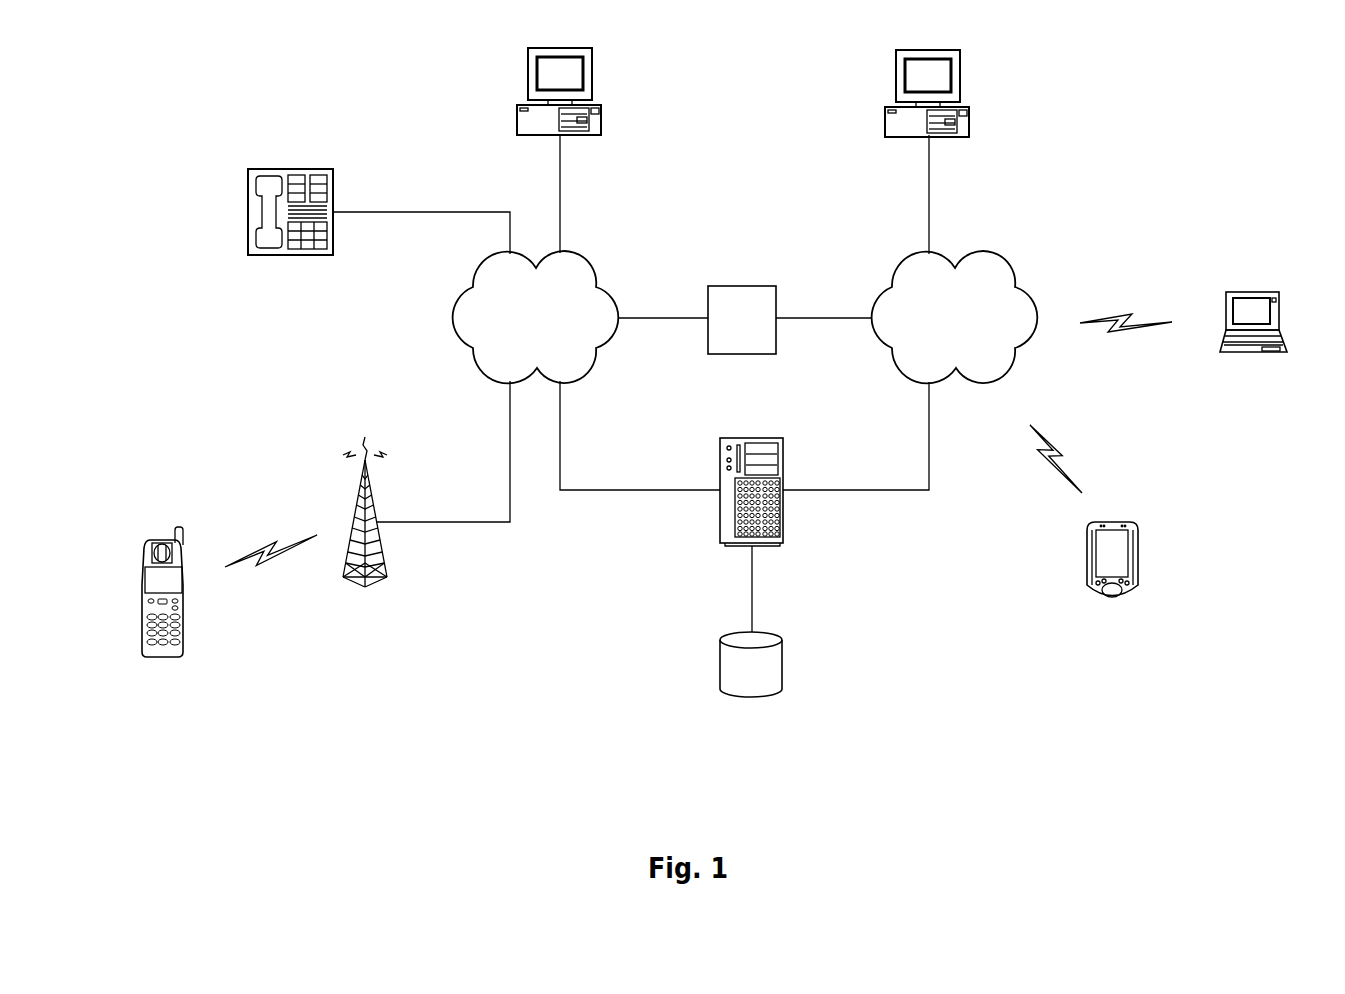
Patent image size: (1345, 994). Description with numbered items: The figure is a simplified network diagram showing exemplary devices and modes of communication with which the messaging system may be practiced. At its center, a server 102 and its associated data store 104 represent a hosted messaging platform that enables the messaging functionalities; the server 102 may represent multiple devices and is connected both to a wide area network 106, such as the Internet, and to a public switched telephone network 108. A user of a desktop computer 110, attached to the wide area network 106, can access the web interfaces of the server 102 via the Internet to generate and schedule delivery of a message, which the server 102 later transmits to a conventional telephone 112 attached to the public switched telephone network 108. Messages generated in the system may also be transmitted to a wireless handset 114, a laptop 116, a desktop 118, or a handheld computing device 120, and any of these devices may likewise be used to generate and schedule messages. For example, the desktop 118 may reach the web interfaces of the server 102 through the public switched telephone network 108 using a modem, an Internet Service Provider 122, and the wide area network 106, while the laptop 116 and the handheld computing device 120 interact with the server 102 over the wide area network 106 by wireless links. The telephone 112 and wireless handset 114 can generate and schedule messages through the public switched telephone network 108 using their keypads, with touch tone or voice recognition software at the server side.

The server 102 is at (752, 438).
The data store 104 is at (785, 662).
The wide area network 106 is at (978, 253).
The public switched telephone network 108 is at (589, 268).
The desktop computer 110 is at (927, 50).
The conventional telephone 112 is at (292, 169).
The wireless handset 114 is at (163, 540).
The laptop 116 is at (1253, 292).
The desktop computer 118 is at (562, 47).
The handheld computing device 120 is at (1113, 522).
The Internet Service Provider 122 is at (742, 284).